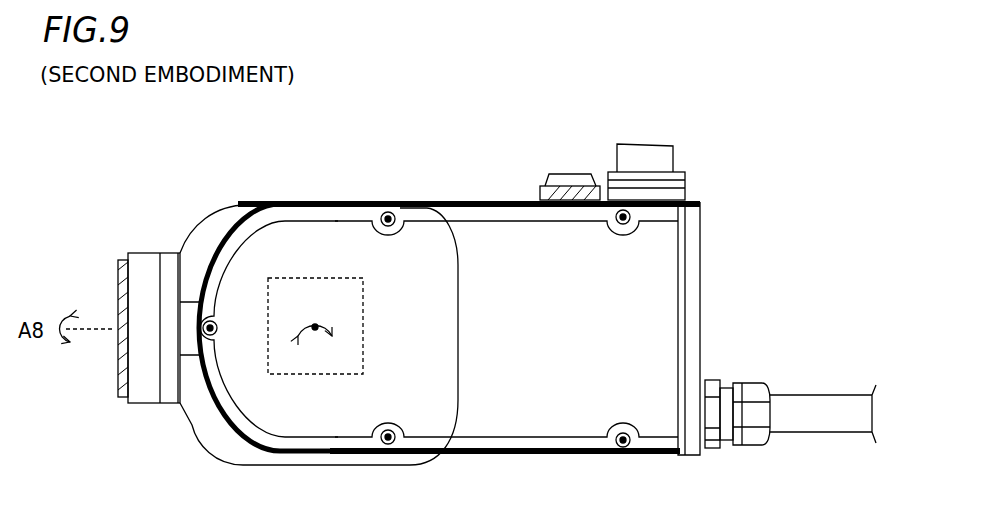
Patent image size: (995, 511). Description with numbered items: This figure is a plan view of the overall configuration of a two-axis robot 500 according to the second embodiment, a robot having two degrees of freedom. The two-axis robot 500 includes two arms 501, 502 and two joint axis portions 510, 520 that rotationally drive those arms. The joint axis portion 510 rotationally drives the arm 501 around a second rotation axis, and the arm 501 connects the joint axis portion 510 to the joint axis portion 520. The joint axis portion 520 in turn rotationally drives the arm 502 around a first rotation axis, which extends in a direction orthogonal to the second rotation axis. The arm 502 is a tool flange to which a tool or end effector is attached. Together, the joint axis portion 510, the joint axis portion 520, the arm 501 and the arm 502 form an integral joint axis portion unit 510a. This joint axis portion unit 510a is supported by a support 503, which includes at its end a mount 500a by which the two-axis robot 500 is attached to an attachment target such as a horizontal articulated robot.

The two-axis robot 500 is at (735, 160).
The mount 500a is at (710, 286).
The arm 501 is at (270, 200).
The arm 502 is at (127, 250).
The support 503 is at (509, 197).
The joint axis portion 510 is at (338, 274).
The joint axis portion unit 510a is at (413, 201).
The joint axis portion 520 is at (174, 244).